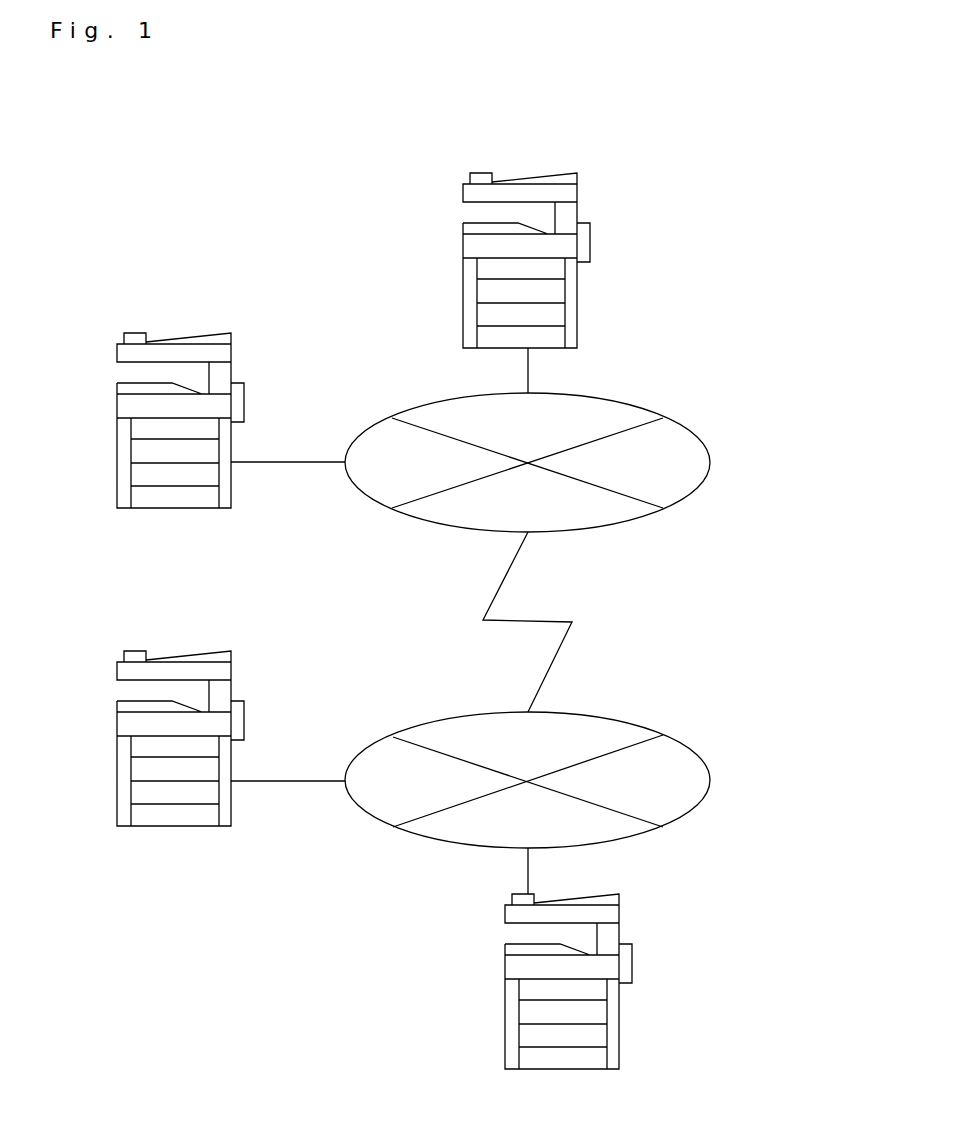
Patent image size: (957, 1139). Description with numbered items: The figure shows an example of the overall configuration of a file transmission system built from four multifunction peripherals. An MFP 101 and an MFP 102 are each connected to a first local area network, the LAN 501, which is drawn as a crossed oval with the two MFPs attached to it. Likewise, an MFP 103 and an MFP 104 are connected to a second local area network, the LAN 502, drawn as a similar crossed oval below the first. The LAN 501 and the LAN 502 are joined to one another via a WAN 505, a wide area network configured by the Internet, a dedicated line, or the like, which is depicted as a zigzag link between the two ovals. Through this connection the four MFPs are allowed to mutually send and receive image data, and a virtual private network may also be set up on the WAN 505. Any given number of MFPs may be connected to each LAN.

The MFP 101 is at (590, 240).
The MFP 102 is at (245, 398).
The MFP 103 is at (245, 717).
The MFP 104 is at (632, 960).
The LAN 501 is at (710, 460).
The LAN 502 is at (710, 778).
The WAN 505 is at (550, 620).